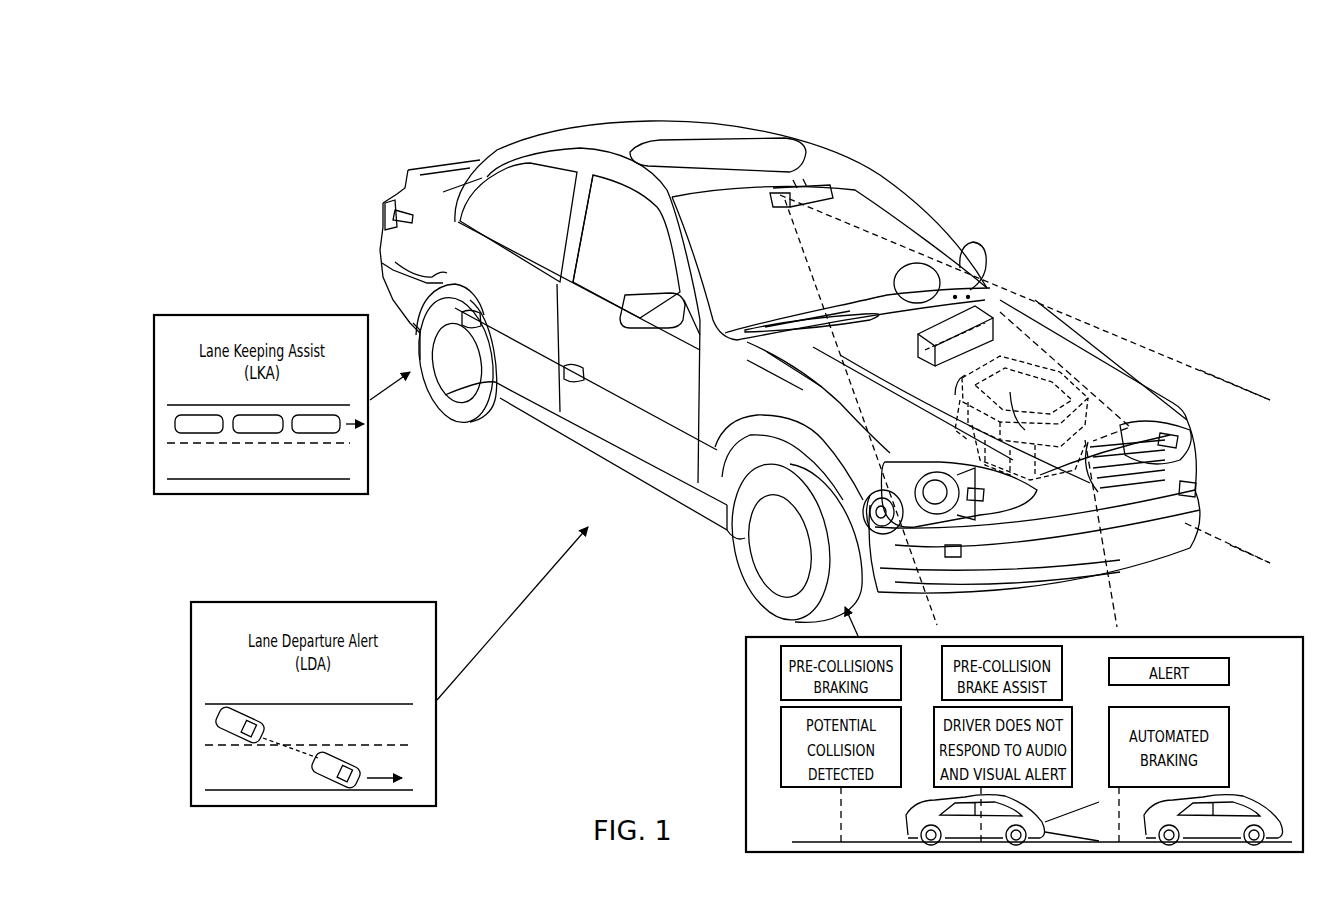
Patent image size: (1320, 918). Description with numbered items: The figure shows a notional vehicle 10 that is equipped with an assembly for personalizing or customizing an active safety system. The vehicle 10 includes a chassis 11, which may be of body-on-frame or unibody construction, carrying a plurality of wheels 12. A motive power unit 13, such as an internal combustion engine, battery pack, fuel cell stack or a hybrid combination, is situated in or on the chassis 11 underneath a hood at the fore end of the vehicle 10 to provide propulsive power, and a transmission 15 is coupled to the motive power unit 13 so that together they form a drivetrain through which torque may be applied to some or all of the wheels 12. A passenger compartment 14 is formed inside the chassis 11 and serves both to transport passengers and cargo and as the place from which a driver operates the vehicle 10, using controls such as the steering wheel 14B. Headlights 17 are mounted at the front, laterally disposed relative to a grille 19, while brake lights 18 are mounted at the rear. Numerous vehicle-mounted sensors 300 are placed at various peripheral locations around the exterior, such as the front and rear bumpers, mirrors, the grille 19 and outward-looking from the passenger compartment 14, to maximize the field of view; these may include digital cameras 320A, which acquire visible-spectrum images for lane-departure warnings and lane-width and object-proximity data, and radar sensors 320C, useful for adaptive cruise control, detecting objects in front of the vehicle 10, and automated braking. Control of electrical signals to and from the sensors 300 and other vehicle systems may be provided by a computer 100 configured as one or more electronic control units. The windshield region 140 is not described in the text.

The vehicle 10 is at (490, 150).
The chassis 11 is at (606, 452).
The wheels 12 is at (430, 395).
The motive power unit 13 is at (1080, 395).
The passenger compartment 14 is at (741, 279).
The steering wheel 14B is at (905, 290).
The transmission 15 is at (884, 502).
The headlights 17 is at (975, 297).
The brake lights 18 is at (397, 226).
The grille 19 is at (1127, 470).
The computer 100 is at (1000, 340).
The windshield glass 140 is at (895, 225).
The sensors 300 is at (400, 202).
The digital cameras 320A is at (1210, 376).
The radar sensors 320C is at (1240, 558).